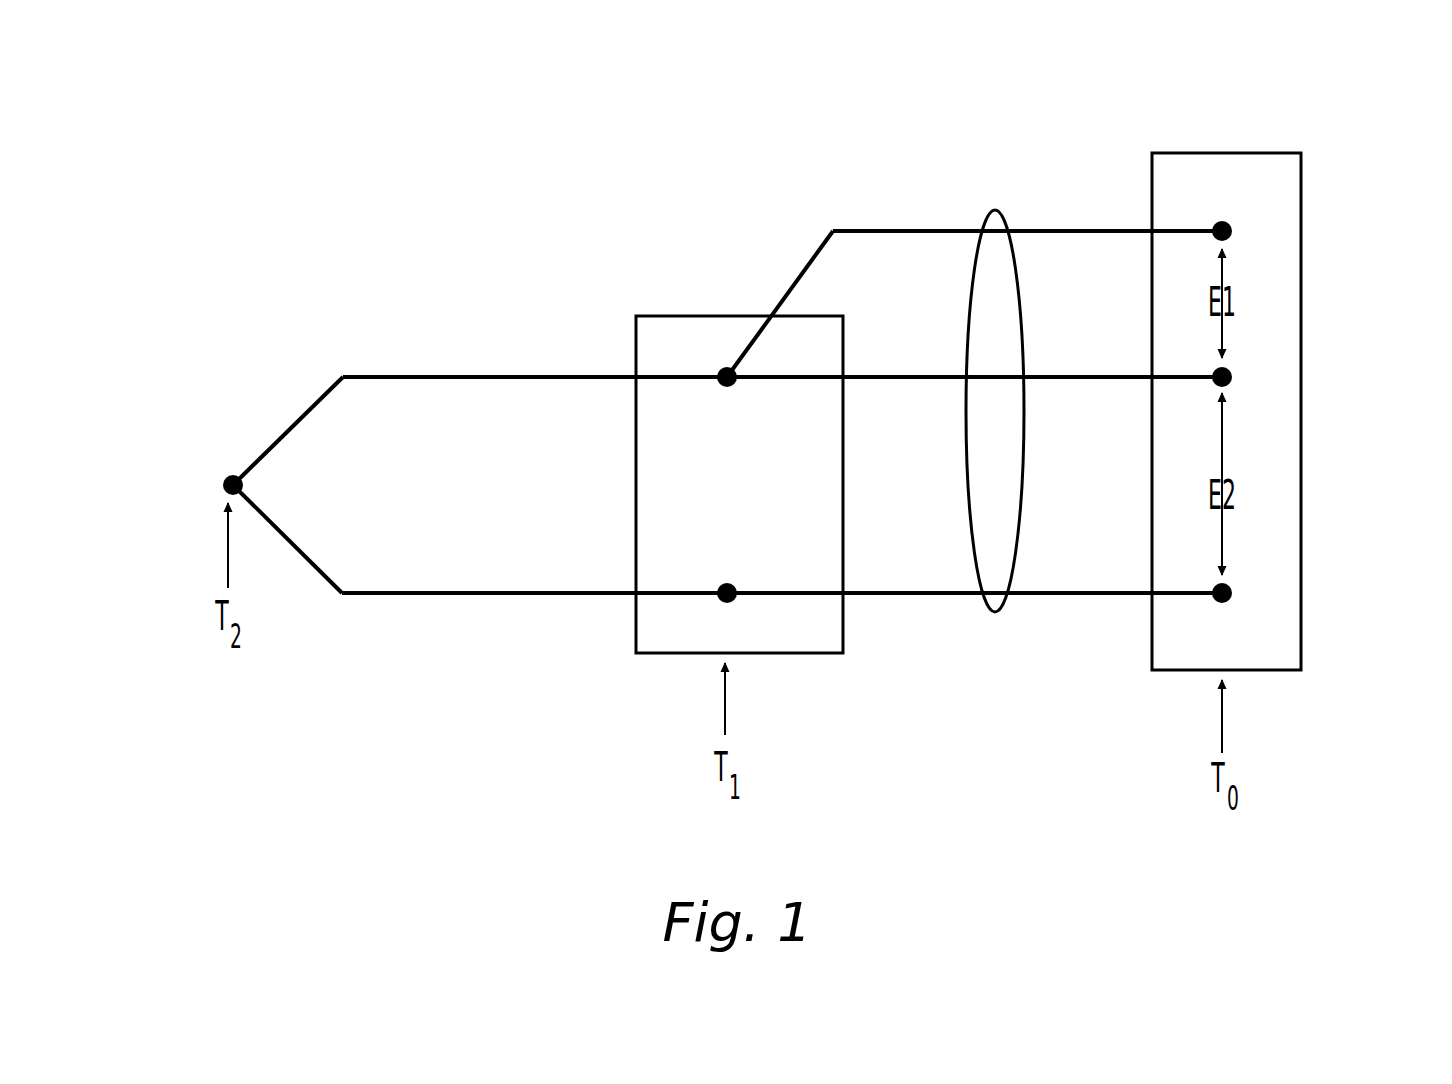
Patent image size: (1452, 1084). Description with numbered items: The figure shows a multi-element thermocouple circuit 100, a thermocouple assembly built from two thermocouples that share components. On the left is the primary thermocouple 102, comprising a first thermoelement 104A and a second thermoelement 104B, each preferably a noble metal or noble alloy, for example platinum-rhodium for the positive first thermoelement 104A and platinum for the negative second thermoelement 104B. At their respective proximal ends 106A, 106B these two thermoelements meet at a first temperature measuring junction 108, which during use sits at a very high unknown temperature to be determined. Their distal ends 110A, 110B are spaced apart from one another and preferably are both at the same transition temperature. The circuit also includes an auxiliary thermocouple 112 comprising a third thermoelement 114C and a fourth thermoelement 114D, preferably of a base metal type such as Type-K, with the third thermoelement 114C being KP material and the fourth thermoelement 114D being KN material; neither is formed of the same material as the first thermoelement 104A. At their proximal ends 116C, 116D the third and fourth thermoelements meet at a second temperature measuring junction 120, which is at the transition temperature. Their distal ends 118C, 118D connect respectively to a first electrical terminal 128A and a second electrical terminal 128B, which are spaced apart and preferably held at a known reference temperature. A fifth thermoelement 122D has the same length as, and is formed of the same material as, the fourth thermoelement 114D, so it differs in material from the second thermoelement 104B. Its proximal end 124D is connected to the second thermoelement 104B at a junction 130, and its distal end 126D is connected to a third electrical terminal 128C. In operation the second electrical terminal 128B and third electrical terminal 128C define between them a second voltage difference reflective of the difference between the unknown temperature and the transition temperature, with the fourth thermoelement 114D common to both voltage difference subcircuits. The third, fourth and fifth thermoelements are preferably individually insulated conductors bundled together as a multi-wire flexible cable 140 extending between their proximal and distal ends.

The multi-element thermocouple circuit 100 is at (163, 105).
The primary thermocouple 102 is at (283, 426).
The first thermoelement 104A is at (407, 375).
The second thermoelement 104B is at (455, 596).
The proximal end of first thermoelement 106A is at (270, 468).
The proximal end of second thermoelement 106B is at (288, 522).
The first temperature measuring junction 108 is at (231, 485).
The distal end of first thermoelement 110A is at (699, 384).
The distal end of second thermoelement 110B is at (700, 582).
The auxiliary thermocouple 112 is at (789, 289).
The third thermoelement 114C is at (907, 229).
The fourth thermoelement 114D is at (952, 376).
The proximal end of third thermoelement 116C is at (765, 333).
The proximal end of fourth thermoelement 116D is at (758, 383).
The distal end of third thermoelement 118C is at (1189, 226).
The distal end of fourth thermoelement 118D is at (1206, 389).
The second temperature measuring junction 120 is at (722, 370).
The fifth thermoelement 122D is at (901, 596).
The proximal end of fifth thermoelement 124D is at (739, 581).
The distal end of fifth thermoelement 126D is at (1182, 601).
The first electrical terminal 128A is at (1230, 228).
The second electrical terminal 128B is at (1230, 384).
The third electrical terminal 128C is at (1232, 589).
The junction 130 is at (731, 602).
The multi-wire flexible cable 140 is at (995, 614).